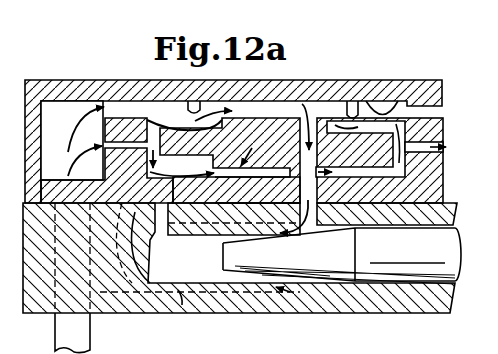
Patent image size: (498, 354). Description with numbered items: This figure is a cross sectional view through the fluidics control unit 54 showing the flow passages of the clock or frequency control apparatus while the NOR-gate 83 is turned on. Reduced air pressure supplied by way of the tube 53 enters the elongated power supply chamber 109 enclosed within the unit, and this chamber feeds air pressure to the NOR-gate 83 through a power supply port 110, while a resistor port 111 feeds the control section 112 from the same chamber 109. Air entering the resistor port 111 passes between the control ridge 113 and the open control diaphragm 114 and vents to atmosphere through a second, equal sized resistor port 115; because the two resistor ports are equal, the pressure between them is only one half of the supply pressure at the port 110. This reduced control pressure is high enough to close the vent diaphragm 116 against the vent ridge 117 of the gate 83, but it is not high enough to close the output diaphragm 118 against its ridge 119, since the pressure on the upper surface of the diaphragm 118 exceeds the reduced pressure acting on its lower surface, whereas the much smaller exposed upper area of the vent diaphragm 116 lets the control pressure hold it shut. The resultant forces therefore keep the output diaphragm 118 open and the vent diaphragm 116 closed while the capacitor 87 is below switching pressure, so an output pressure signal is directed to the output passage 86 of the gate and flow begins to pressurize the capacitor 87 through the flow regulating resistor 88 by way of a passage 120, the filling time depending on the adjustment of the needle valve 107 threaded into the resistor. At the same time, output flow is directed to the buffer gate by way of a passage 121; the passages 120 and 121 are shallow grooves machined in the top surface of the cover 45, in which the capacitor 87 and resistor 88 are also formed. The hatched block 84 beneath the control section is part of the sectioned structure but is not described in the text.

The fluidics control unit 54 is at (428, 78).
The power supply chamber 109 is at (72, 128).
The power supply port 110 is at (127, 104).
The resistor port 111 is at (85, 161).
The control ridge 113 is at (150, 168).
The control section 112 is at (230, 160).
The control diaphragm 114 is at (205, 184).
The output diaphragm 118 is at (220, 104).
The ridge 119 is at (187, 110).
The NOR-gate 83 is at (270, 103).
The vent ridge 117 is at (346, 102).
The vent diaphragm 116 is at (383, 101).
The output passage 86 is at (314, 163).
The resistor port 115 is at (443, 140).
The block 84 is at (190, 209).
The passage 121 is at (412, 207).
The cover 45 is at (347, 305).
The tube 53 is at (90, 333).
The passage 120 is at (149, 243).
The capacitor 87 is at (182, 305).
The adjustable resistor 88 is at (278, 292).
The needle valve 107 is at (432, 262).